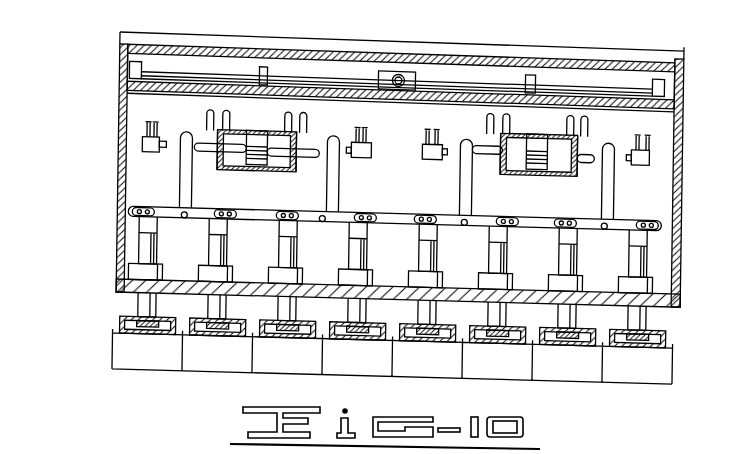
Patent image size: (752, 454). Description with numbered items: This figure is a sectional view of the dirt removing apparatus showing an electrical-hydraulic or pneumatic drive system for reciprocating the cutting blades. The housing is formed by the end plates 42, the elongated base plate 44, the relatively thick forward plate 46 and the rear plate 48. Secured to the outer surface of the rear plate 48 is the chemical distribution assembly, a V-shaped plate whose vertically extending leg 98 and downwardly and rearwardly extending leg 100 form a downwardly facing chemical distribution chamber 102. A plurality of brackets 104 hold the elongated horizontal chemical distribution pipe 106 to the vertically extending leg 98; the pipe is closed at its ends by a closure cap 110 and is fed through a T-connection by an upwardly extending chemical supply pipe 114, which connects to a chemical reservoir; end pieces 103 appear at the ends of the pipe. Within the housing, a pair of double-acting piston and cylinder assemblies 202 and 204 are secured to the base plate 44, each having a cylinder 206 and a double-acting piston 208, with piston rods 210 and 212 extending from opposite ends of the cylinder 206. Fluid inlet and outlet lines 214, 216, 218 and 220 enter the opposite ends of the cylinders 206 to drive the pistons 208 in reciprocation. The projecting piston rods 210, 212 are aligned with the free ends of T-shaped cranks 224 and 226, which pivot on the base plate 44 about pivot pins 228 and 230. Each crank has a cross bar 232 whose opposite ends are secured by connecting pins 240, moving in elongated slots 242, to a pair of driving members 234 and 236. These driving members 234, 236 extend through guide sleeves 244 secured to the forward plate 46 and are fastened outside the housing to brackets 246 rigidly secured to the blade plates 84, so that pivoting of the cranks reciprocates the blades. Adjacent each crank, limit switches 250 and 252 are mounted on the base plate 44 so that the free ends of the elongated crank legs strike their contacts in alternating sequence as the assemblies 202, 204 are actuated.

The end plate 42 is at (118, 116).
The base plate 44 is at (405, 190).
The forward plate 46 is at (389, 288).
The rear plate 48 is at (322, 110).
The blade plate 84 is at (163, 360).
The vertically extending leg 98 is at (597, 93).
The downwardly and rearwardly extending leg 100 is at (527, 36).
The chemical distribution chamber 102 is at (300, 63).
The end cap 103 is at (122, 68).
The bracket 104 is at (533, 76).
The chemical distribution pipe 106 is at (179, 72).
The closure cap 110 is at (678, 54).
The chemical supply pipe 114 is at (382, 70).
The double-acting piston and cylinder assembly 202 is at (519, 186).
The double-acting piston and cylinder assembly 204 is at (233, 177).
The cylinder 206 is at (287, 172).
The double-acting piston 208 is at (273, 130).
The piston rod 210 is at (305, 148).
The piston rod 212 is at (202, 142).
The fluid inlet and outlet line 214 is at (300, 120).
The fluid inlet and outlet line 216 is at (488, 115).
The fluid inlet and outlet line 218 is at (511, 117).
The fluid inlet and outlet line 220 is at (583, 120).
The T-shaped crank 224 is at (334, 181).
The T-shaped crank 226 is at (185, 175).
The pivot pin 228 is at (313, 224).
The pivot pin 230 is at (185, 216).
The cross bar 232 is at (205, 210).
The driving member 234 is at (228, 236).
The driving member 236 is at (143, 231).
The connecting pin 240 is at (140, 209).
The elongated slot 242 is at (136, 215).
The guide sleeve 244 is at (135, 270).
The bracket 246 is at (122, 322).
The limit switch 250 is at (372, 151).
The limit switch 252 is at (145, 148).